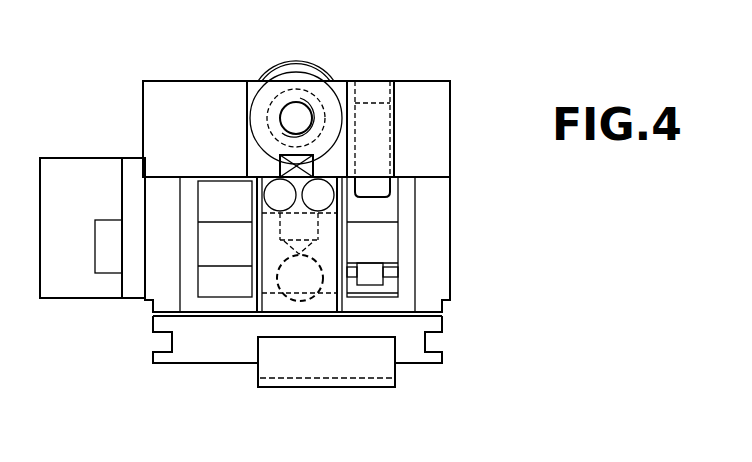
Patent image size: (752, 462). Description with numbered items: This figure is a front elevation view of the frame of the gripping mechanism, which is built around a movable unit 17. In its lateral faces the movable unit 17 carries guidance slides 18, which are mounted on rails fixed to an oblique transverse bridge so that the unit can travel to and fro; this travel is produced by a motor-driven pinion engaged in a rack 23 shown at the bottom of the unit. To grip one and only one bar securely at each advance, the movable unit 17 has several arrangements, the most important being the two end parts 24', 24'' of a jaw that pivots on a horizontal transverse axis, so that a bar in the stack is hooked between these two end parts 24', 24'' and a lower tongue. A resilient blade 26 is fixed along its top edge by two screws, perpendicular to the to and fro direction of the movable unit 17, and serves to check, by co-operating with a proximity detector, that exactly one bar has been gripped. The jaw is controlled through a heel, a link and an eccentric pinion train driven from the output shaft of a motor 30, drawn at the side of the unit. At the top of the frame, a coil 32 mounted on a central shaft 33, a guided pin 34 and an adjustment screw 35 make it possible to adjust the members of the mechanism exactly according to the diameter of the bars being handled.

The movable unit 17 is at (451, 207).
The guidance slides 18 is at (163, 343).
The rack 23 is at (325, 387).
The end part of jaw 24' is at (225, 244).
The end part of jaw 24'' is at (372, 242).
The resilient blade 26 is at (275, 258).
The motor 30 is at (84, 204).
The coil 32 is at (290, 72).
The central shaft 33 is at (305, 108).
The guided pin 34 is at (282, 162).
The adjustment screw 35 is at (378, 113).